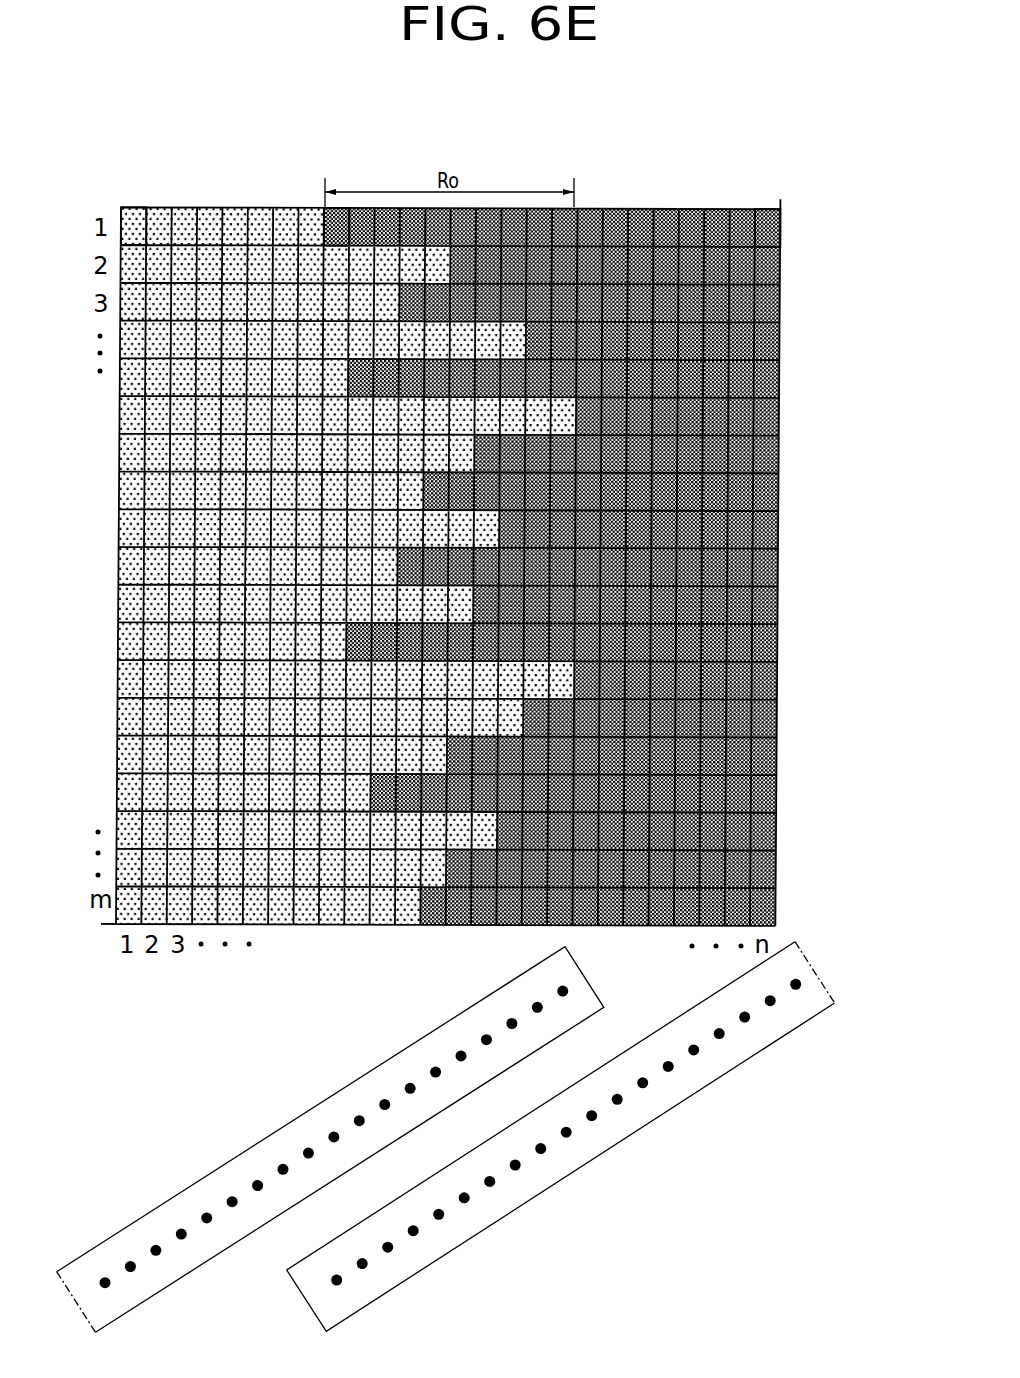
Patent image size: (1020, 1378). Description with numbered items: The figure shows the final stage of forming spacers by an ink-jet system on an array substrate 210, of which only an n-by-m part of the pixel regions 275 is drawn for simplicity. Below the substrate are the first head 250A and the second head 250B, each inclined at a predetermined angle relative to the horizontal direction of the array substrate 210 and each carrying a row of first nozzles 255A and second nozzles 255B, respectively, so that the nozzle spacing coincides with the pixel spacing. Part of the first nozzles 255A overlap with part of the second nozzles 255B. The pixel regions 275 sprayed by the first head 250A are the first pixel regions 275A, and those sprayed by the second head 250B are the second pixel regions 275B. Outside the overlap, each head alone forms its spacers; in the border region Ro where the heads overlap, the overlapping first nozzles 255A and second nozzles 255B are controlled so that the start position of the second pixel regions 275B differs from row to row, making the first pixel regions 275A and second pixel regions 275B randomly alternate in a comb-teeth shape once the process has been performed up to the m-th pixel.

The array substrate 210 is at (803, 186).
The pixel regions 275 is at (776, 229).
The first pixel regions 275A is at (134, 214).
The second pixel regions 275B is at (334, 214).
The first head 250A is at (203, 1186).
The second head 250B is at (698, 1077).
The first nozzles 255A is at (308, 1152).
The second nozzles 255B is at (592, 1117).